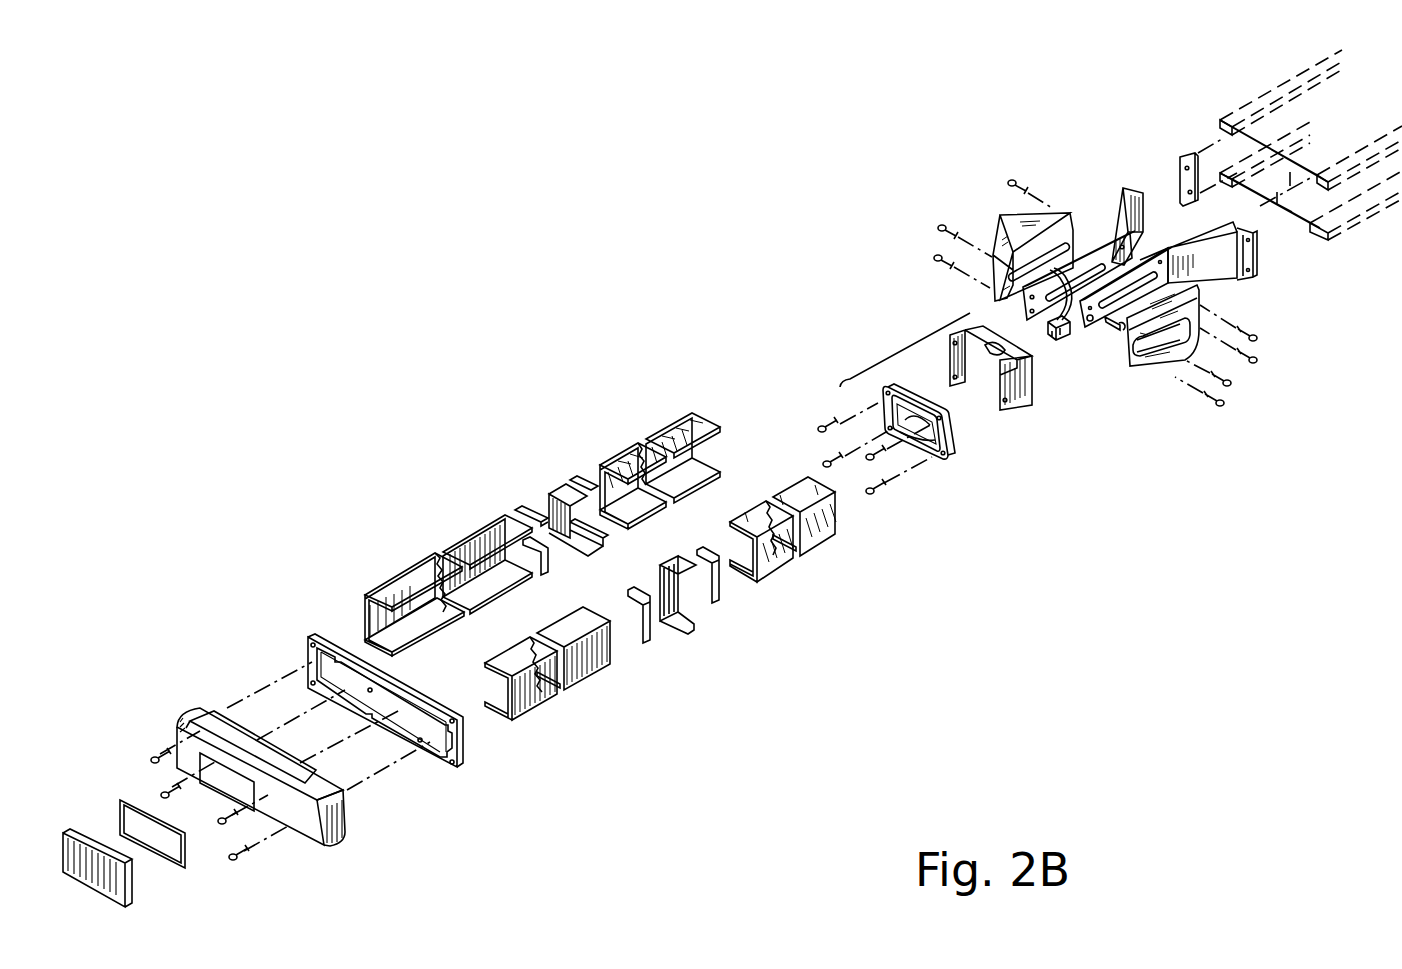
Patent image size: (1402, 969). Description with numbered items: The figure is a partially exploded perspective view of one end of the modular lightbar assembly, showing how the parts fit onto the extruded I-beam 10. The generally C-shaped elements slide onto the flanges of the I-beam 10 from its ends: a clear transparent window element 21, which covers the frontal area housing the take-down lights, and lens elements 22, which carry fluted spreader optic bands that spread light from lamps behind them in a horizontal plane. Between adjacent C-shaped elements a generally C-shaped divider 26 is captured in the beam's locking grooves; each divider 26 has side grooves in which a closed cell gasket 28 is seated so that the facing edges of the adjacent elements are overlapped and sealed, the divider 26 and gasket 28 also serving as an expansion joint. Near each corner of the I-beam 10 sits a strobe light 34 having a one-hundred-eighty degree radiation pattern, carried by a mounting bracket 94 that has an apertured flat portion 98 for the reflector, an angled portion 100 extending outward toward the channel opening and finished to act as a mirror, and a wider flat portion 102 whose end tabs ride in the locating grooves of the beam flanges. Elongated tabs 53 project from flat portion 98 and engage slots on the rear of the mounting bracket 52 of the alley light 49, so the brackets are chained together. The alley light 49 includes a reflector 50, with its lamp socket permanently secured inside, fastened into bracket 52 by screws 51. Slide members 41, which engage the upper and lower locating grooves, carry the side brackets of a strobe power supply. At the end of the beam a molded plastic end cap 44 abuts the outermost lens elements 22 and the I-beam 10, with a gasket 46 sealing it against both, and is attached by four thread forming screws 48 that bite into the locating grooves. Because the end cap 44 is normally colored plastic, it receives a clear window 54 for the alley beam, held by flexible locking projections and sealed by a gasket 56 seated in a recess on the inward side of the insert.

The I-beam 10 is at (1340, 133).
The C-shaped window element 21 is at (830, 543).
The lens element 22 is at (585, 680).
The divider 26 is at (550, 490).
The gasket 28 is at (645, 645).
The 180° strobe light 34 is at (995, 218).
The slide member 41 is at (1183, 157).
The end cap 44 is at (345, 820).
The gasket 46 is at (308, 637).
The thread forming screws 48 is at (250, 850).
The halogen spot light 49 is at (910, 345).
The reflector 50 is at (950, 452).
The screws 51 is at (828, 462).
The mounting bracket 52 is at (1017, 410).
The tabs 53 is at (1030, 313).
The window 54 is at (128, 885).
The gasket 56 is at (120, 802).
The mounting bracket 94 is at (1093, 235).
The apertured flat portion 98 is at (1082, 258).
The angled portion 100 is at (1225, 273).
The flat portion 102 is at (1128, 190).